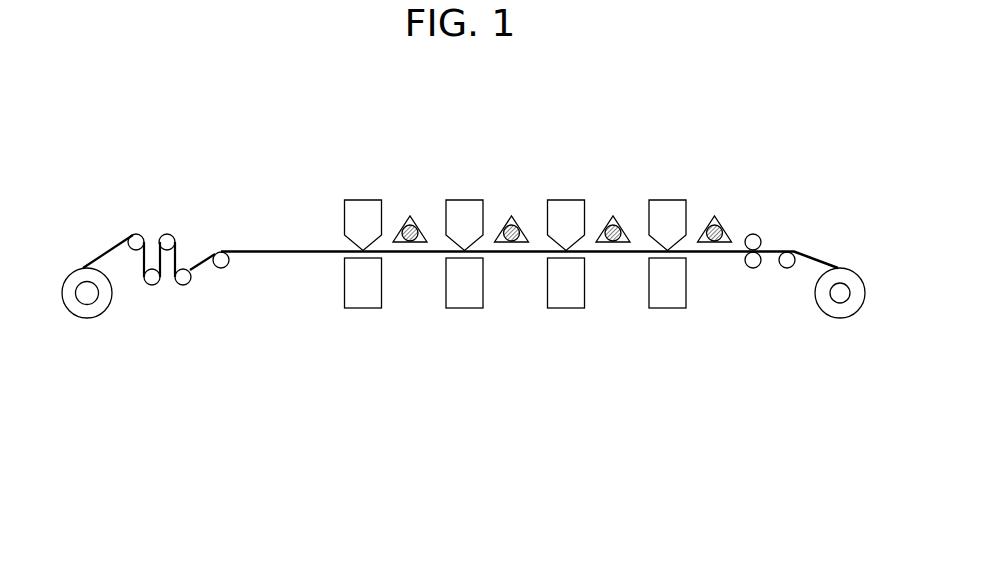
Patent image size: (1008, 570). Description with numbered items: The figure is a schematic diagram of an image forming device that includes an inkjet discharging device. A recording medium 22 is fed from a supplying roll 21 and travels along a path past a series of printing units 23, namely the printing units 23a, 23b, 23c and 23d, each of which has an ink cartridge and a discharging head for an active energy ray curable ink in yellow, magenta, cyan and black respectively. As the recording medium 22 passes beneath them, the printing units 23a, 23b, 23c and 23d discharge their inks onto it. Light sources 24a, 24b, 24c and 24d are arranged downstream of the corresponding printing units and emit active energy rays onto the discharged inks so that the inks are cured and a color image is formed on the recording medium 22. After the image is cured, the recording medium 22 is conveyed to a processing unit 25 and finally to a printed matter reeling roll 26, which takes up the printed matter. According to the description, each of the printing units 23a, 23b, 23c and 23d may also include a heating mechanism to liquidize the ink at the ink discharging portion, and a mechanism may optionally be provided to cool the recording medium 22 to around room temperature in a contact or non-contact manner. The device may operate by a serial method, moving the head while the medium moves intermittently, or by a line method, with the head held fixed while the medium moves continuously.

The supplying roll 21 is at (90, 299).
The recording medium 22 is at (260, 250).
The printing units 23 is at (533, 206).
The printing unit 23a is at (363, 206).
The printing unit 23b is at (464, 206).
The printing unit 23c is at (566, 206).
The printing unit 23d is at (667, 235).
The light source 24a is at (410, 217).
The light source 24b is at (512, 217).
The light source 24c is at (613, 217).
The light source 24d is at (714, 217).
The processing unit 25 is at (781, 204).
The printed matter reeling roll 26 is at (842, 298).